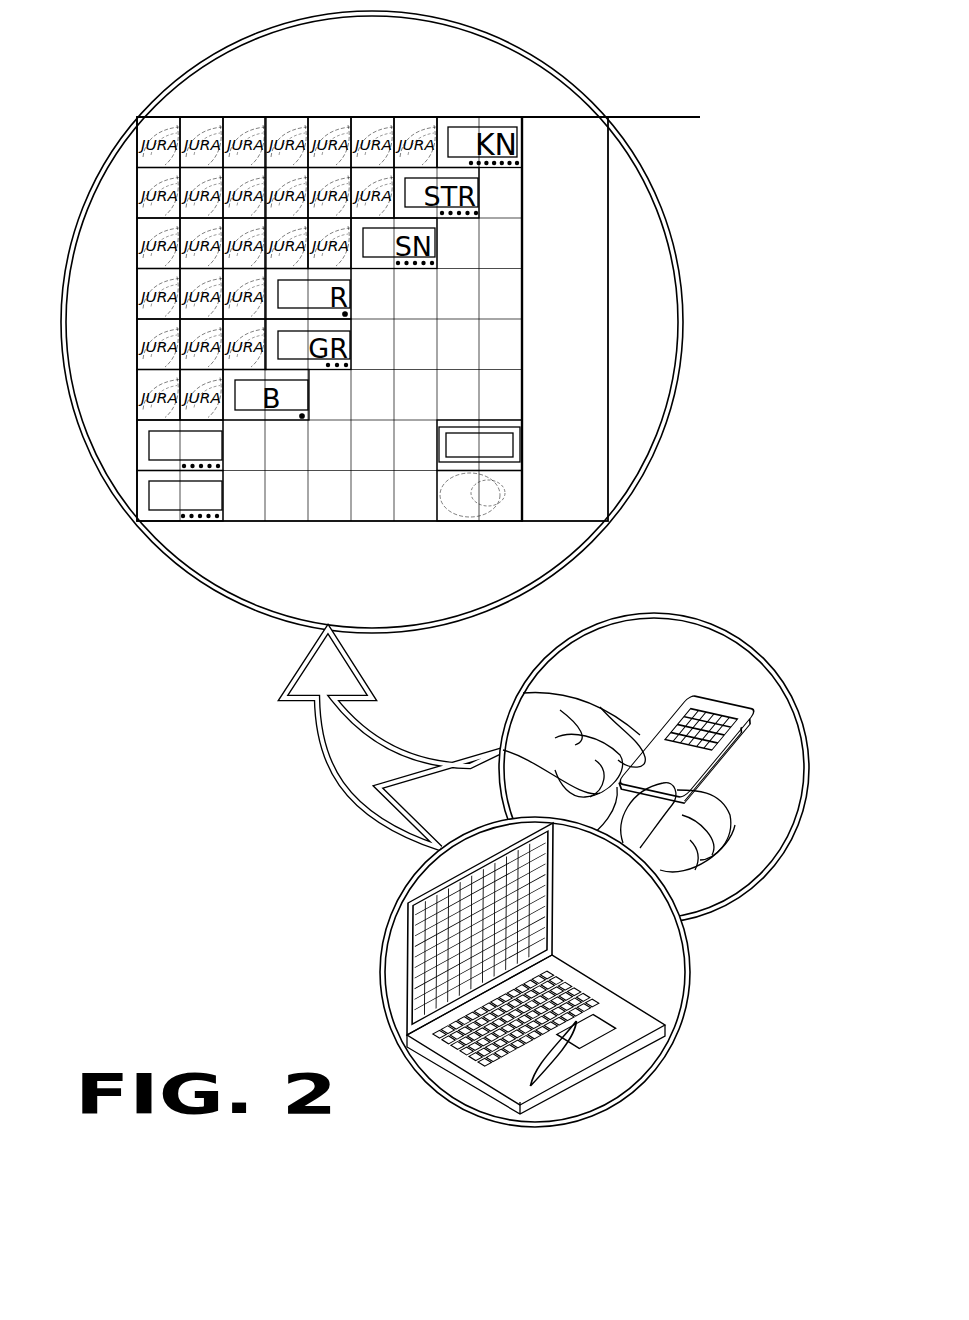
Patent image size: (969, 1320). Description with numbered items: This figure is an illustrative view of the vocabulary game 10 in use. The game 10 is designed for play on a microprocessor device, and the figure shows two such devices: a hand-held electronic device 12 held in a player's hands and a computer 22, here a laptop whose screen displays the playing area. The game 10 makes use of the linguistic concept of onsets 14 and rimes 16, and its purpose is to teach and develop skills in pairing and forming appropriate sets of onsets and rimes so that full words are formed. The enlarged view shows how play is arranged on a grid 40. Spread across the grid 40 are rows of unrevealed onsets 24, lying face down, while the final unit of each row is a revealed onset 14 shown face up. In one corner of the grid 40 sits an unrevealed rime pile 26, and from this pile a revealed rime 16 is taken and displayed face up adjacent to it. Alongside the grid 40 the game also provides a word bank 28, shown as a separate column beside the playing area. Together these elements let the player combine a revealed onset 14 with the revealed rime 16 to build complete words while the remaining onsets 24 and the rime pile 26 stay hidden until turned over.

The vocabulary game 10 is at (772, 108).
The hand-held electronic device 12 is at (755, 705).
The onsets 14 is at (223, 449).
The rimes 16 is at (517, 448).
The computer 22 is at (423, 925).
The unrevealed onsets 24 is at (203, 137).
The unrevealed rime pile 26 is at (483, 512).
The word bank 28 is at (600, 165).
The grid 40 is at (363, 492).